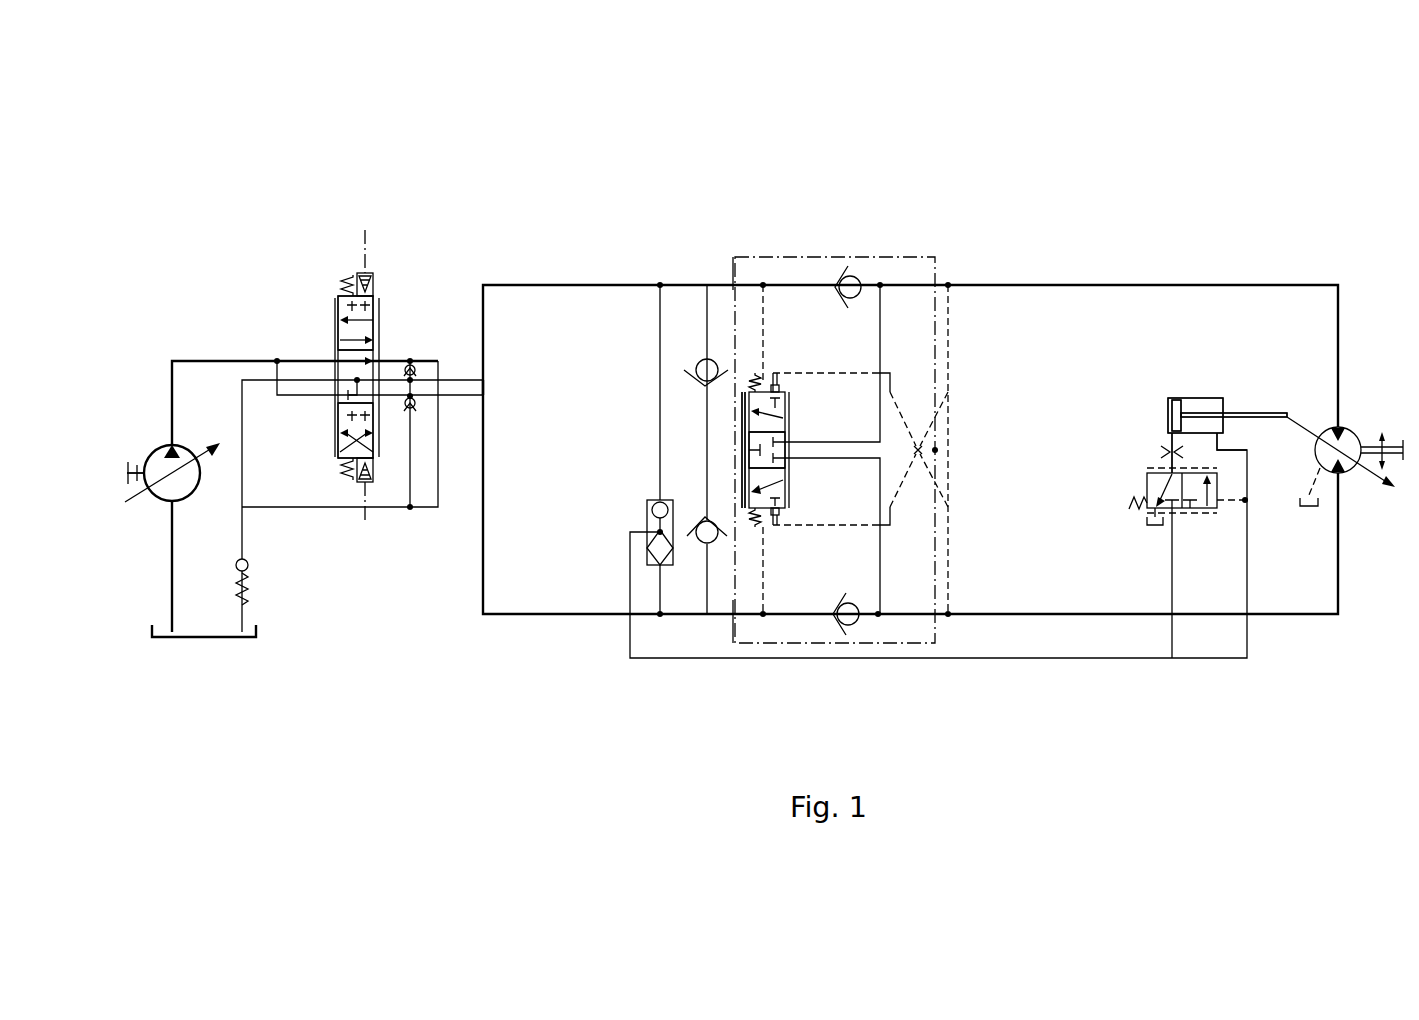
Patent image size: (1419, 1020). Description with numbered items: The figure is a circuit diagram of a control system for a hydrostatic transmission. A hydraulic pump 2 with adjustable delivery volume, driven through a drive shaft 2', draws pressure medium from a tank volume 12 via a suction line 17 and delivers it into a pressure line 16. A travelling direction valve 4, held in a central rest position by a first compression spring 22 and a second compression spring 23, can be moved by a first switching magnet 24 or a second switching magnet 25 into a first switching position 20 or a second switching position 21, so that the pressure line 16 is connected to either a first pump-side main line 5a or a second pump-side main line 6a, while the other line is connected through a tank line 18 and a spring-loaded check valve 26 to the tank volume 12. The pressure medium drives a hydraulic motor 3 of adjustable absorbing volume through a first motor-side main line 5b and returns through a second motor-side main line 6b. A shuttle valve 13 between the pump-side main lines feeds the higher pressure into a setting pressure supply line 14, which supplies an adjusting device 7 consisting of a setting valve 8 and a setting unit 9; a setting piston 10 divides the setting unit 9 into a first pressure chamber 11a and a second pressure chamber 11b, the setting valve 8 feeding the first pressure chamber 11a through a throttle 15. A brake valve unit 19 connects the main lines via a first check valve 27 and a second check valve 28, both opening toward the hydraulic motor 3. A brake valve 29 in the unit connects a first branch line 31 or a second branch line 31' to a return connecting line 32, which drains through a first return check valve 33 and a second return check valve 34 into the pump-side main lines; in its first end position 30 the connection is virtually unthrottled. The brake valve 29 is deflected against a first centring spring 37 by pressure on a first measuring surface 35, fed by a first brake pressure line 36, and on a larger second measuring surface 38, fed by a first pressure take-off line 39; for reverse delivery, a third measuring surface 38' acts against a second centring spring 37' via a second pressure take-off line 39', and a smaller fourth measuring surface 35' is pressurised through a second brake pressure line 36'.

The hydraulic pump 2 is at (178, 493).
The drive shaft 2' is at (137, 435).
The hydraulic motor 3 is at (1352, 430).
The travelling direction valve 4 is at (326, 297).
The first pump-side main line 5a is at (590, 285).
The first motor-side main line 5b is at (1102, 285).
The second pump-side main line 6a is at (534, 614).
The second motor-side main line 6b is at (1086, 614).
The adjusting device 7 is at (1262, 512).
The setting valve 8 is at (1138, 468).
The setting unit 9 is at (1202, 397).
The setting piston 10 is at (1168, 398).
The first pressure chamber 11a is at (1168, 422).
The second pressure chamber 11b is at (1212, 398).
The tank volume 12 is at (206, 640).
The shuttle valve 13 is at (647, 521).
The setting pressure supply line 14 is at (800, 658).
The throttle 15 is at (1163, 452).
The pressure line 16 is at (200, 361).
The suction line 17 is at (172, 562).
The tank line 18 is at (242, 410).
The brake valve unit 19 is at (764, 257).
The first switching position 20 is at (340, 447).
The second switching position 21 is at (375, 328).
The first compression spring 22 is at (342, 470).
The second compression spring 23 is at (344, 284).
The first switching magnet 24 is at (380, 482).
The second switching magnet 25 is at (375, 293).
The spring-loaded check valve 26 is at (252, 590).
The first check valve 27 is at (856, 274).
The second check valve 28 is at (852, 630).
The brake valve 29 is at (742, 428).
The first end position 30 is at (786, 410).
The first branch line 31 is at (856, 536).
The second branch line 31' is at (860, 363).
The return connecting line 32 is at (742, 455).
The first return check valve 33 is at (692, 370).
The second return check valve 34 is at (705, 545).
The first measuring surface 35 is at (803, 394).
The fourth measuring surface 35' is at (810, 506).
The first brake pressure line 36 is at (880, 437).
The second brake pressure line 36' is at (966, 449).
The first centring spring 37 is at (773, 585).
The second centring spring 37' is at (714, 315).
The second measuring surface 38 is at (778, 352).
The third measuring surface 38' is at (790, 537).
The first pressure take-off line 39 is at (731, 317).
The second pressure take-off line 39' is at (724, 588).